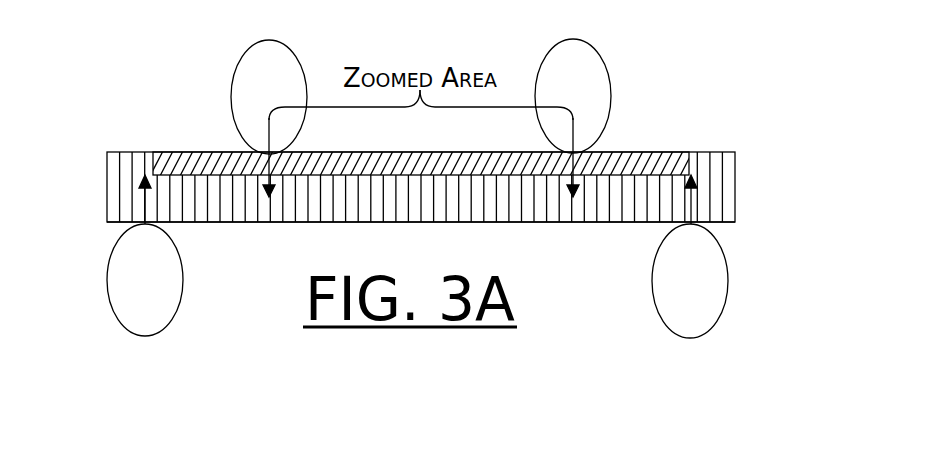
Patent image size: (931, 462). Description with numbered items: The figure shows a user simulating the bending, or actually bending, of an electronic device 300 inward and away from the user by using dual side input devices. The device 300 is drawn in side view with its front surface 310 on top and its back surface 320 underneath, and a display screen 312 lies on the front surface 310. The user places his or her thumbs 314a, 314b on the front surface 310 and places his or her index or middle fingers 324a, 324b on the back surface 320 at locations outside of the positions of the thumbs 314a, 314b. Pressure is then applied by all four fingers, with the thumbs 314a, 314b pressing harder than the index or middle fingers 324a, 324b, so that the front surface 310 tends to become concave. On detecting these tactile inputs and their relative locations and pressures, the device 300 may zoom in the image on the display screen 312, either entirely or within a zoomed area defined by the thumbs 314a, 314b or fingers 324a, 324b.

The electronic device 300 is at (735, 188).
The front surface 310 is at (710, 153).
The display screen 312 is at (177, 152).
The thumb 314a is at (267, 40).
The thumb 314b is at (573, 39).
The back surface 320 is at (718, 222).
The index or middle finger 324a is at (143, 335).
The index or middle finger 324b is at (690, 338).